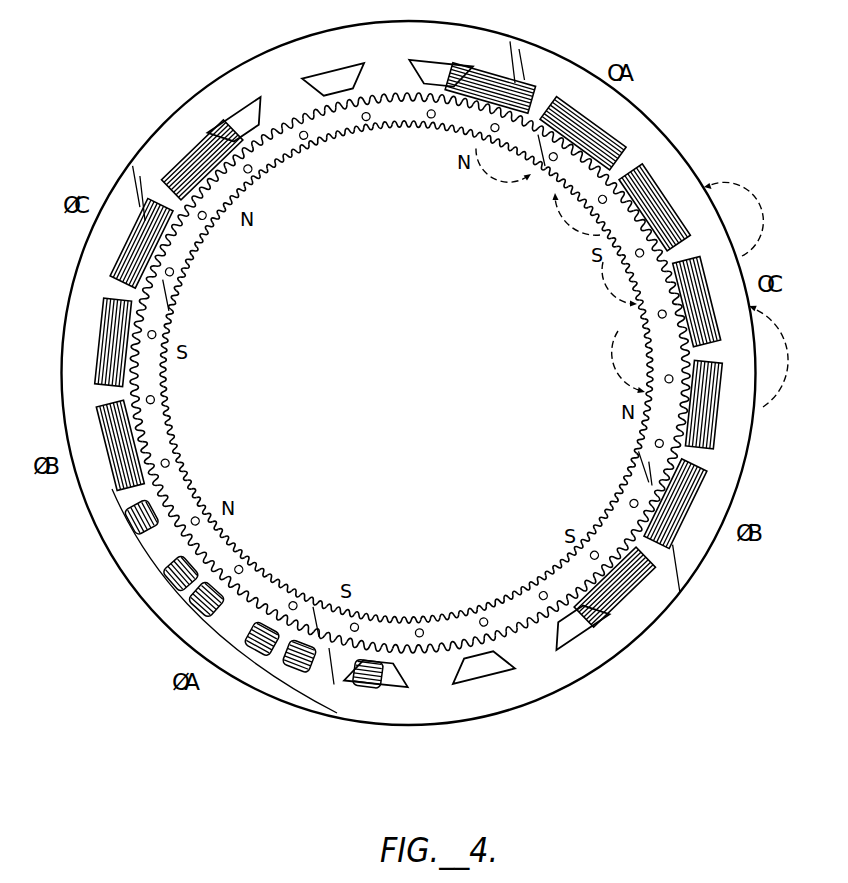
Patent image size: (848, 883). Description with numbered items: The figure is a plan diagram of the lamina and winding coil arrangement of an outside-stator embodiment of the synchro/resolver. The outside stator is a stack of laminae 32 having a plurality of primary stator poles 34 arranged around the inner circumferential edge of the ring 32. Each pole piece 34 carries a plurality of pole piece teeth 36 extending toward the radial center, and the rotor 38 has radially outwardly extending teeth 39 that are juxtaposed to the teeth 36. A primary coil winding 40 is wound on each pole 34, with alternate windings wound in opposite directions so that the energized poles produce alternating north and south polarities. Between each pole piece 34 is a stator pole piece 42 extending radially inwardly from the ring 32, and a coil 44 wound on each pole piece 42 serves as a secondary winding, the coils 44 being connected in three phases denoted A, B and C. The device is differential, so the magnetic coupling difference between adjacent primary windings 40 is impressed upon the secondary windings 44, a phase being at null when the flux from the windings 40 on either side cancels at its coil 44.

The laminae 32 is at (300, 703).
The primary stator poles 34 is at (159, 541).
The pole piece teeth 36 is at (380, 662).
The rotor 38 is at (225, 555).
The rotor teeth 39 is at (207, 555).
The primary coil winding 40 is at (136, 519).
The stator pole piece 42 is at (233, 617).
The coil 44 is at (200, 603).